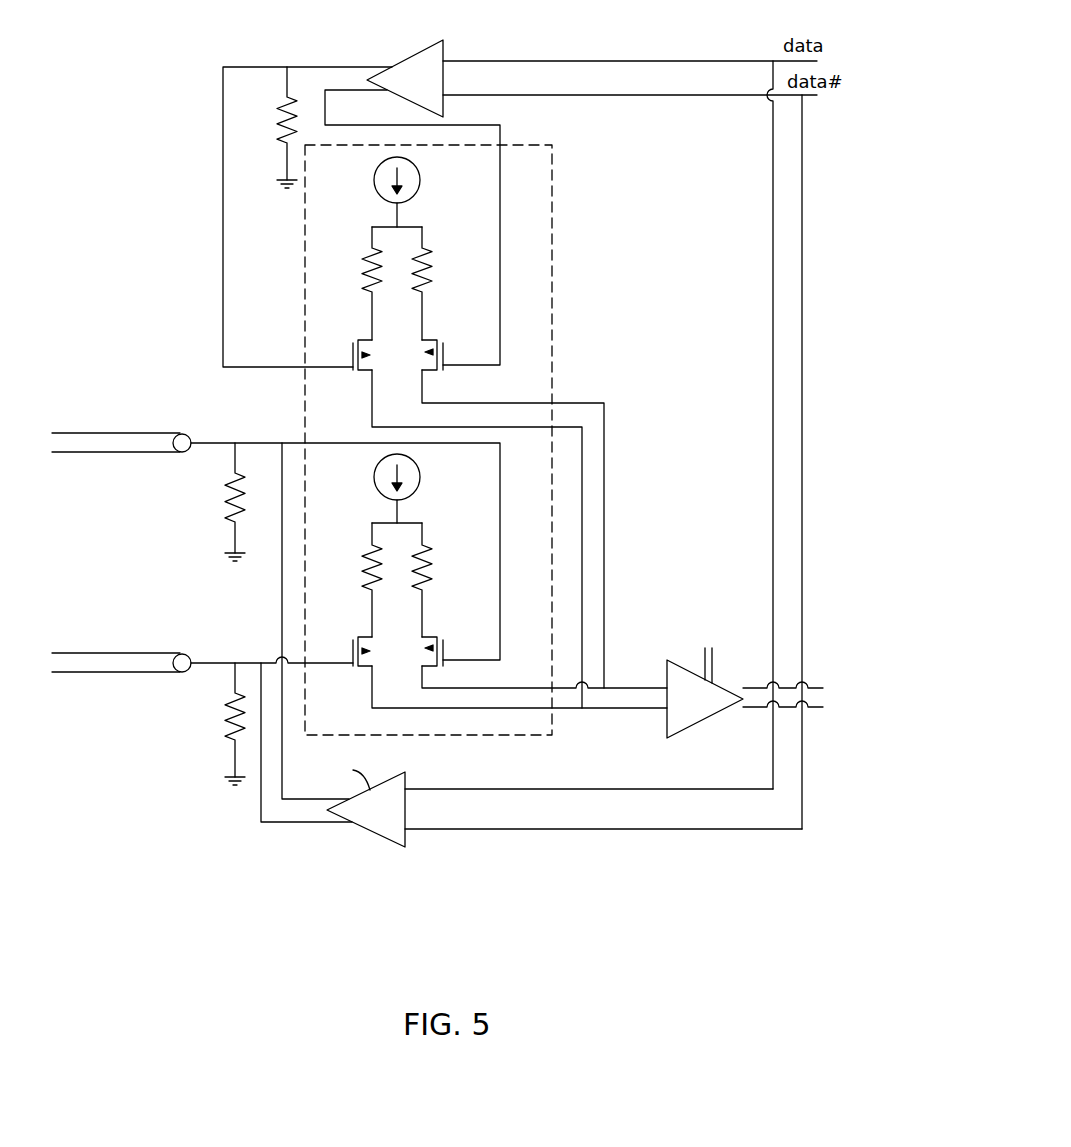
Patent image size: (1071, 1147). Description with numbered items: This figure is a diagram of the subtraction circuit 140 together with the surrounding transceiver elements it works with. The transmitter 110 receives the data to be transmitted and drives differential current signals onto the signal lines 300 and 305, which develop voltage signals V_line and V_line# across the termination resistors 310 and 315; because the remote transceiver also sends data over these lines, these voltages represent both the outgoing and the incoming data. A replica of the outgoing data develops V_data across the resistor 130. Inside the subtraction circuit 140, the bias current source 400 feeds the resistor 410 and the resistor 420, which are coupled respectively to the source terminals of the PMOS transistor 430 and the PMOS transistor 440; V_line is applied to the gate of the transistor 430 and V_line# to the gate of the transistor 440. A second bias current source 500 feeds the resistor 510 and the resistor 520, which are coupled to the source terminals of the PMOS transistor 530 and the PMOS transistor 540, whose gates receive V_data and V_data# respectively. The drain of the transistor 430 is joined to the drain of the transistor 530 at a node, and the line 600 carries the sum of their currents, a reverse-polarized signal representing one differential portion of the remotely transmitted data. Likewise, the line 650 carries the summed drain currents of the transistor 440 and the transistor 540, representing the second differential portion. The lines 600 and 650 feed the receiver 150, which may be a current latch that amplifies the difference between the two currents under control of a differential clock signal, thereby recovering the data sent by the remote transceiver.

The transmitter 110 is at (410, 56).
The resistor 130 is at (266, 127).
The subtraction circuit 140 is at (517, 143).
The receiver 150 is at (700, 722).
The signal line 300 is at (135, 433).
The signal line 305 is at (135, 653).
The termination resistor 310 is at (213, 502).
The termination resistor 315 is at (213, 724).
The bias current source 400 is at (420, 488).
The resistor 410 is at (445, 580).
The resistor 420 is at (352, 580).
The PMOS transistor 430 is at (454, 640).
The PMOS transistor 440 is at (345, 640).
The bias current source 500 is at (420, 192).
The resistor 510 is at (445, 283).
The resistor 520 is at (352, 283).
The PMOS transistor 530 is at (454, 345).
The PMOS transistor 540 is at (345, 345).
The line 600 is at (544, 673).
The line 650 is at (519, 700).